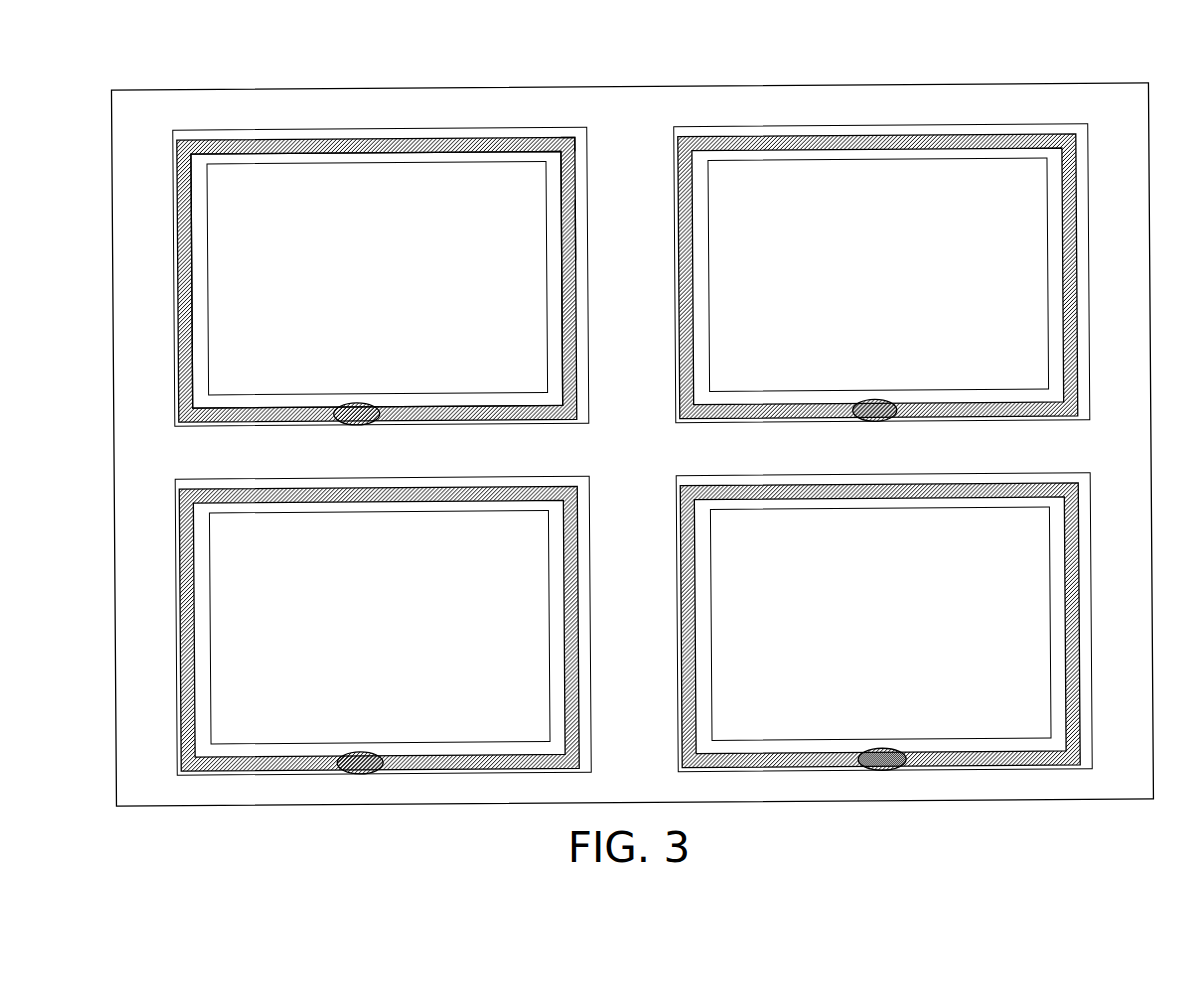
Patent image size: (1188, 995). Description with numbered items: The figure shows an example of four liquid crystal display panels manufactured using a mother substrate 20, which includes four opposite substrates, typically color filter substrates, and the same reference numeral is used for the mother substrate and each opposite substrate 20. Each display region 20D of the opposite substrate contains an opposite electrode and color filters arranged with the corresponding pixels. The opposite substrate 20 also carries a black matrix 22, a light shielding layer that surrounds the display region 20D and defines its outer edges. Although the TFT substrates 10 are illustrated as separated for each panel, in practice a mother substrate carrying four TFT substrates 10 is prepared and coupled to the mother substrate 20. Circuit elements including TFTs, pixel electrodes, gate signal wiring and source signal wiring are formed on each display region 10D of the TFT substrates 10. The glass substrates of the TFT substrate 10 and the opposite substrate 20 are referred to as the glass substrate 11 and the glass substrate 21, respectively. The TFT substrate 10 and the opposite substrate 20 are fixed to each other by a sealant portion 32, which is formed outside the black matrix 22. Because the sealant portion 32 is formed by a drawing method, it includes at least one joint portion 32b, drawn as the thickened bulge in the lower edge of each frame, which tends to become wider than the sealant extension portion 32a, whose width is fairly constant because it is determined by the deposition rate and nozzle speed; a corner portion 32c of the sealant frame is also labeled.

The TFT substrate 10 is at (380, 240).
The glass substrate 11 is at (479, 122).
The mother substrate (opposite substrate) 20 is at (632, 426).
The glass substrate 21 is at (1070, 86).
The black matrix 22 is at (387, 147).
The sealant portion 32 is at (292, 136).
The sealant extension portion 32a is at (579, 228).
The joint portion 32b is at (357, 422).
The corner portion of seal member 32c is at (577, 138).
The display region 10D is at (377, 278).
The display region 20D is at (377, 278).